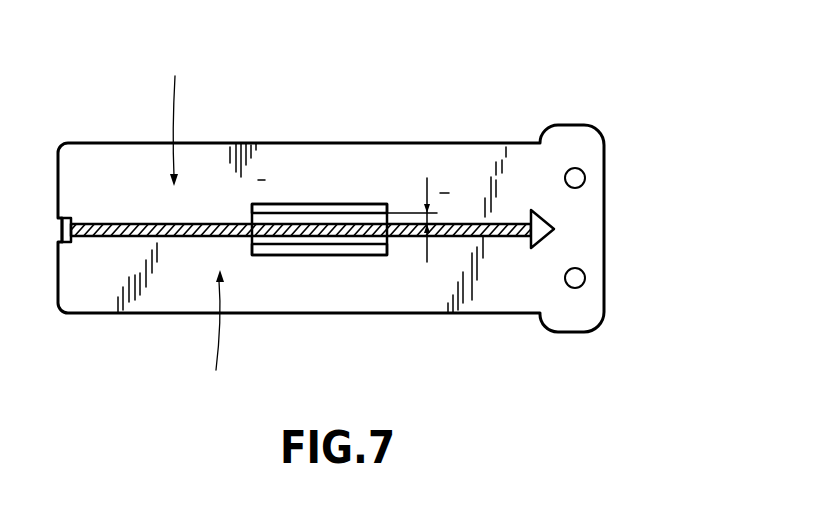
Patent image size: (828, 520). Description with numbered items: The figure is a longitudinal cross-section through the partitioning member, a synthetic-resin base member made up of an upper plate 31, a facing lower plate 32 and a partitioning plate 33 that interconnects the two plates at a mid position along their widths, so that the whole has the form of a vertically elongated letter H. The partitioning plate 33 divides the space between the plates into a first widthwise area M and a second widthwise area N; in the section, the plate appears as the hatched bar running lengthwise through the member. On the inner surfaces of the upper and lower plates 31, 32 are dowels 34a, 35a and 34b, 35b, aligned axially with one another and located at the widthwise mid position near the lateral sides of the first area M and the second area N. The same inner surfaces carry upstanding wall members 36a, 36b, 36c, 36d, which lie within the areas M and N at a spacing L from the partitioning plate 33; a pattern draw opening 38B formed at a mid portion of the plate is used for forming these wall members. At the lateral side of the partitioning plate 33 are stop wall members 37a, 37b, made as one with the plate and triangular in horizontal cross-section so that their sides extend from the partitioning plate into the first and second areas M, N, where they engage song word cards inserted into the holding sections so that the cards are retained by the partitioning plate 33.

The lower plate 32 is at (331, 260).
The upper plate 31 is at (495, 285).
The partitioning plate 33 is at (173, 238).
The dowel 35a is at (667, 175).
The dowel 34a is at (585, 178).
The dowel 35b is at (665, 279).
The dowel 34b is at (585, 278).
The upstanding wall member 36b is at (344, 150).
The upstanding wall member 36a is at (300, 204).
The upstanding wall member 36d is at (371, 302).
The upstanding wall member 36c is at (362, 247).
The stop wall member 37b is at (648, 229).
The stop wall member 37a is at (555, 224).
The pattern draw opening 38B is at (294, 245).
The spacing L is at (437, 217).
The first widthwise area M is at (176, 117).
The second widthwise area N is at (213, 334).